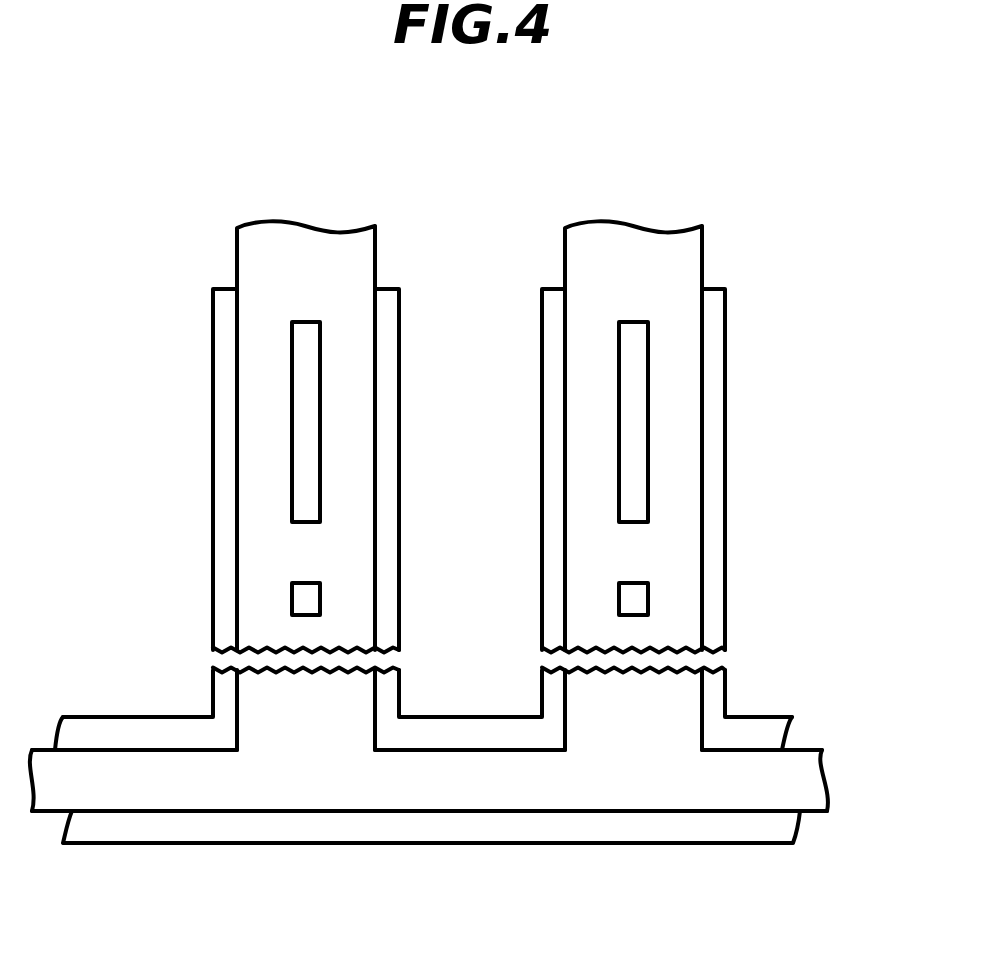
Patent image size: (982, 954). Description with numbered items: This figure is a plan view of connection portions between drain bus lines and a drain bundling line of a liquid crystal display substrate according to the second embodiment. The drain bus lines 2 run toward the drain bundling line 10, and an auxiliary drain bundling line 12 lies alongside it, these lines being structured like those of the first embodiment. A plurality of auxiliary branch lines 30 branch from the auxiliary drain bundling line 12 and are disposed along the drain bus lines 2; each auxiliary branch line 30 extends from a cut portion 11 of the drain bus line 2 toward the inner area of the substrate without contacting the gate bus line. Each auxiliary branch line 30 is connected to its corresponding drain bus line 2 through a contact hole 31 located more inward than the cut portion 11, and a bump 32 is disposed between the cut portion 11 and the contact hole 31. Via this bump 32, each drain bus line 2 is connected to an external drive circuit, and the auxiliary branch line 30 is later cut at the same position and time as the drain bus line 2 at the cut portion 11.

The drain bus line 2 is at (703, 250).
The drain bundling line 10 is at (552, 814).
The cut portion 11 is at (728, 664).
The auxiliary drain bundling line 12 is at (712, 845).
The auxiliary branch line 30 is at (727, 480).
The contact hole 31 is at (648, 372).
The bump 32 is at (649, 601).